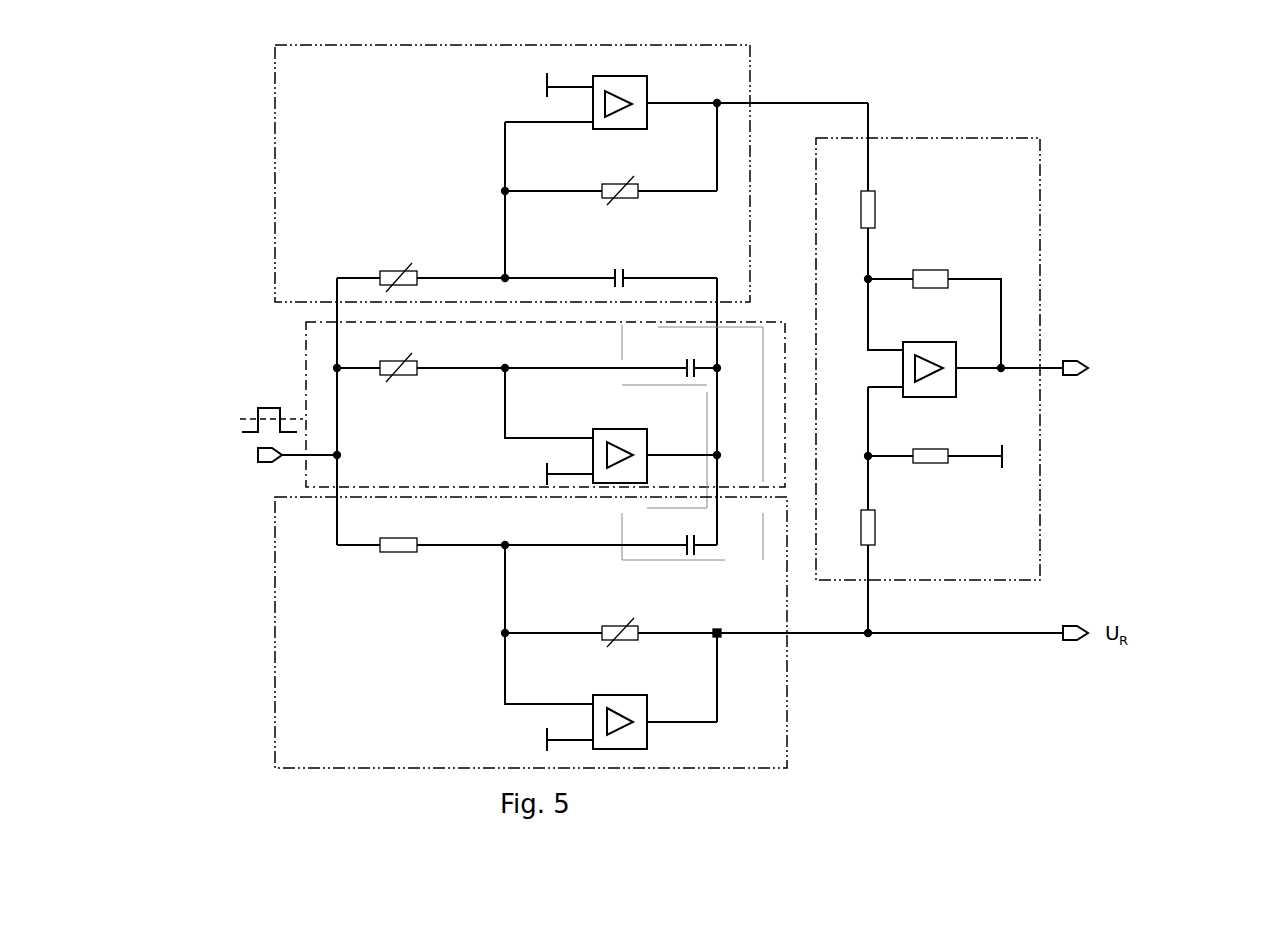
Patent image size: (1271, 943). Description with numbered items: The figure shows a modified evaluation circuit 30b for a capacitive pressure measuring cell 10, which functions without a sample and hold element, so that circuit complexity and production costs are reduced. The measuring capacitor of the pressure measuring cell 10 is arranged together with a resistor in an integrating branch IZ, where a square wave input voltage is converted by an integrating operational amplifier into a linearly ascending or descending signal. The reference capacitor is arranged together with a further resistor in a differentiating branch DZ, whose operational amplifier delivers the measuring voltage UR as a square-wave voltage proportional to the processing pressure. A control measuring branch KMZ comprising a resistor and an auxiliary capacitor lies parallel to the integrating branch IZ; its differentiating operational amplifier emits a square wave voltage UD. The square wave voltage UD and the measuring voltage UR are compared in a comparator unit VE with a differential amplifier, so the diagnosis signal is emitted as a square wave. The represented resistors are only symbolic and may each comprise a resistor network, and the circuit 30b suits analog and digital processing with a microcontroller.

The pressure measuring cell 10 is at (752, 325).
The modified evaluation circuit 30b is at (1125, 133).
The control measuring branch KMZ is at (275, 150).
The integrating branch IZ is at (306, 345).
The differentiating branch DZ is at (275, 610).
The comparator unit VE is at (1040, 498).
The square wave voltage UD is at (740, 104).
The measuring voltage UR is at (758, 628).